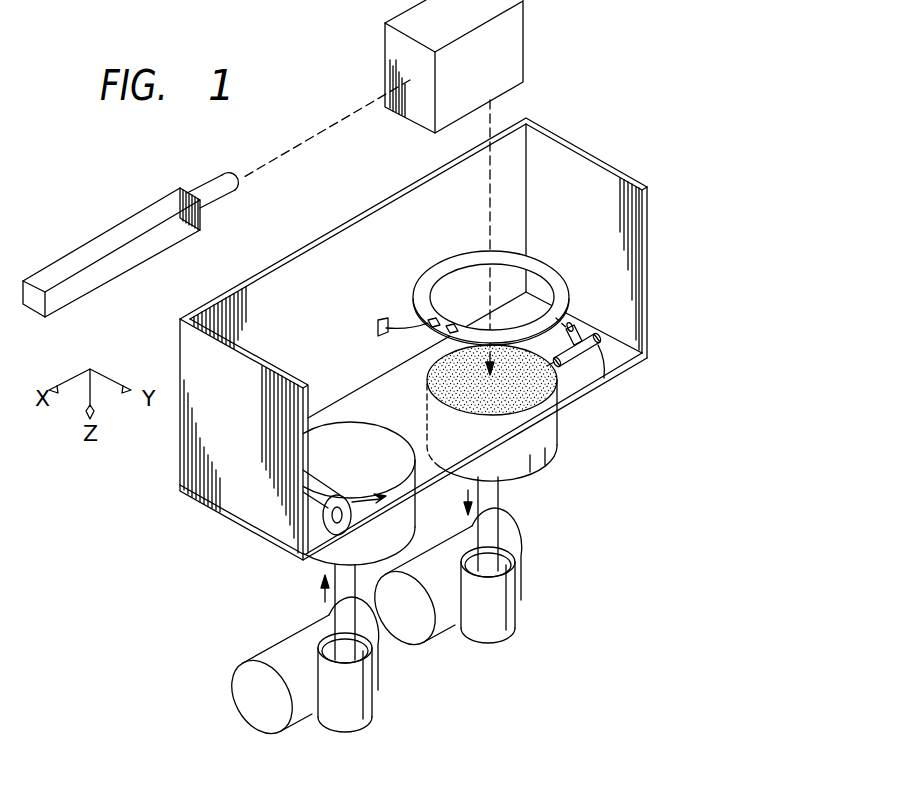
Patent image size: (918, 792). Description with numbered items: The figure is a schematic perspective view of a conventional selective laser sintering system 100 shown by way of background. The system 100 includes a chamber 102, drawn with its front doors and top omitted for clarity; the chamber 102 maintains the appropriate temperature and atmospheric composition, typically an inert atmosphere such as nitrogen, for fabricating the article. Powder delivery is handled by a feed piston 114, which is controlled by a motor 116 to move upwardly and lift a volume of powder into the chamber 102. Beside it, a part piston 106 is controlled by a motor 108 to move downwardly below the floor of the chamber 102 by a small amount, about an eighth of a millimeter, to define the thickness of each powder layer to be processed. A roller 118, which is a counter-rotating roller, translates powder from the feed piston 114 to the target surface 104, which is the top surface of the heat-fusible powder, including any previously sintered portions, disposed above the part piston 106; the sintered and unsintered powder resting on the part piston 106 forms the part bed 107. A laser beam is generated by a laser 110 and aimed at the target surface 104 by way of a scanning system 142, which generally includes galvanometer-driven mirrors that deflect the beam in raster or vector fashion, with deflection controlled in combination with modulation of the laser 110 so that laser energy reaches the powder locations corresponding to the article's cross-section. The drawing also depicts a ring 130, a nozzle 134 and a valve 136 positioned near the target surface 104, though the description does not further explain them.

The selective laser sintering system 100 is at (672, 300).
The chamber 102 is at (612, 164).
The target surface 104 is at (424, 368).
The part piston 106 is at (561, 456).
The part bed 107 is at (428, 421).
The motor 108 is at (515, 606).
The laser 110 is at (95, 243).
The feed piston 114 is at (322, 561).
The motor 116 is at (371, 691).
The roller 118 is at (333, 492).
The ring 130 is at (428, 279).
The gas nozzle 134 is at (600, 376).
The valve 136 is at (572, 333).
The scanning system 142 is at (524, 35).